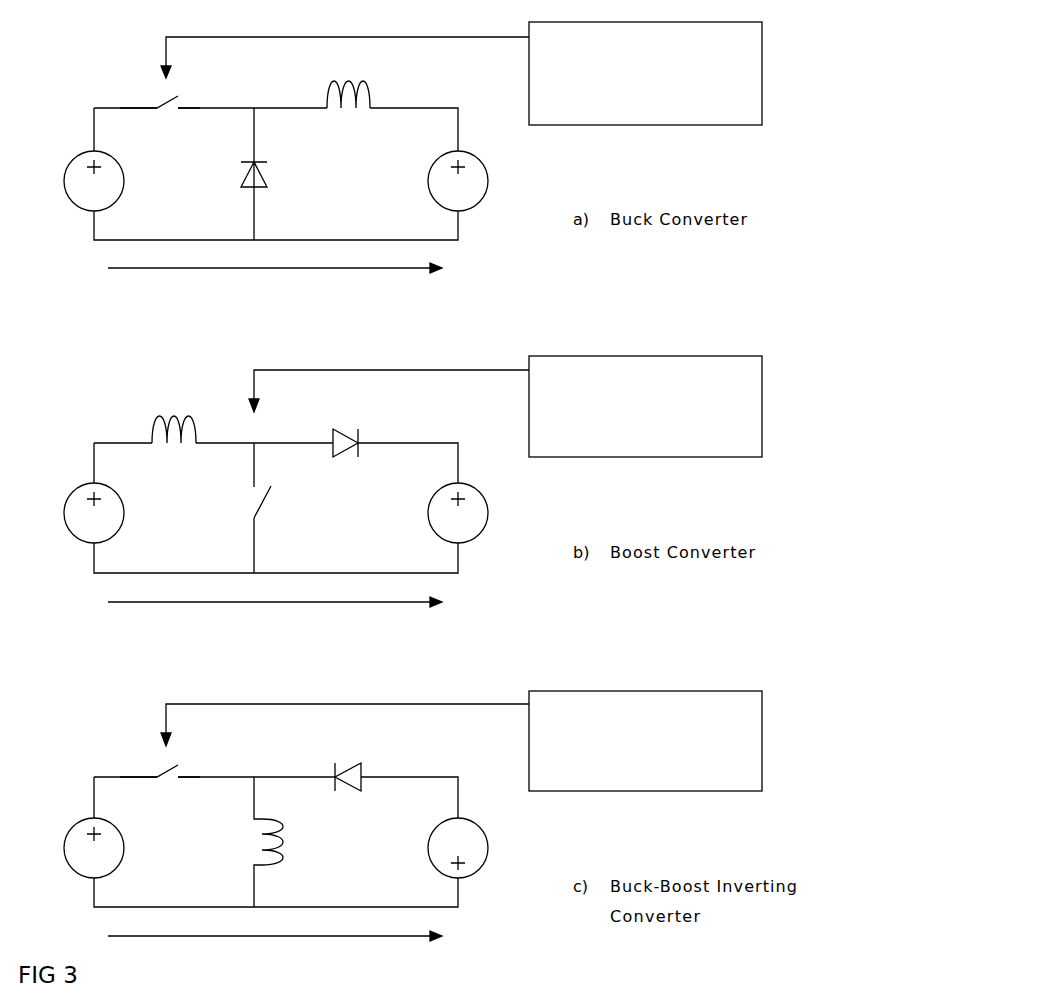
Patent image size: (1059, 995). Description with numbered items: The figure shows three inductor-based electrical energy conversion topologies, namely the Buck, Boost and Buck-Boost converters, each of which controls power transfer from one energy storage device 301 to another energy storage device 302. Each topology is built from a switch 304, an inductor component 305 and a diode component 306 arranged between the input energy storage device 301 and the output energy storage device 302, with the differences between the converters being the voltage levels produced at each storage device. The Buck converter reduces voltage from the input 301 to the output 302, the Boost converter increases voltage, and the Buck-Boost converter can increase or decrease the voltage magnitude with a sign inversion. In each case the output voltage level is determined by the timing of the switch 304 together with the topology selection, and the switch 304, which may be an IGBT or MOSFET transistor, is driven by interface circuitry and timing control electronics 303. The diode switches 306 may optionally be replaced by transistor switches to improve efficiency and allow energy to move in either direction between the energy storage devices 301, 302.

The energy storage device 301 is at (52, 173).
The energy storage device 302 is at (522, 173).
The timing control electronics 303 is at (628, 109).
The switch 304 is at (186, 141).
The inductor component 305 is at (321, 194).
The diode component 306 is at (361, 141).